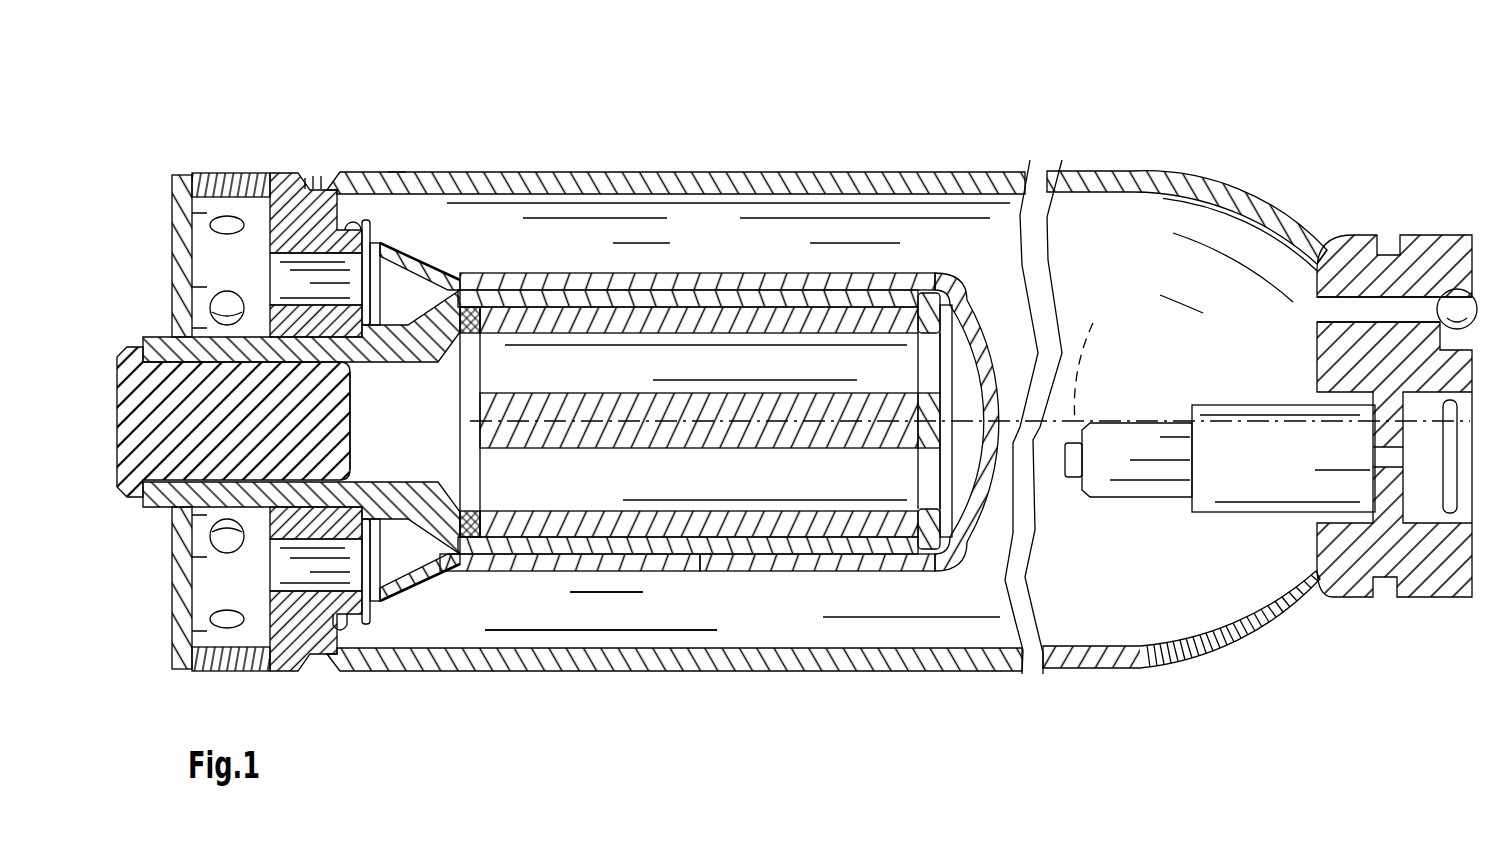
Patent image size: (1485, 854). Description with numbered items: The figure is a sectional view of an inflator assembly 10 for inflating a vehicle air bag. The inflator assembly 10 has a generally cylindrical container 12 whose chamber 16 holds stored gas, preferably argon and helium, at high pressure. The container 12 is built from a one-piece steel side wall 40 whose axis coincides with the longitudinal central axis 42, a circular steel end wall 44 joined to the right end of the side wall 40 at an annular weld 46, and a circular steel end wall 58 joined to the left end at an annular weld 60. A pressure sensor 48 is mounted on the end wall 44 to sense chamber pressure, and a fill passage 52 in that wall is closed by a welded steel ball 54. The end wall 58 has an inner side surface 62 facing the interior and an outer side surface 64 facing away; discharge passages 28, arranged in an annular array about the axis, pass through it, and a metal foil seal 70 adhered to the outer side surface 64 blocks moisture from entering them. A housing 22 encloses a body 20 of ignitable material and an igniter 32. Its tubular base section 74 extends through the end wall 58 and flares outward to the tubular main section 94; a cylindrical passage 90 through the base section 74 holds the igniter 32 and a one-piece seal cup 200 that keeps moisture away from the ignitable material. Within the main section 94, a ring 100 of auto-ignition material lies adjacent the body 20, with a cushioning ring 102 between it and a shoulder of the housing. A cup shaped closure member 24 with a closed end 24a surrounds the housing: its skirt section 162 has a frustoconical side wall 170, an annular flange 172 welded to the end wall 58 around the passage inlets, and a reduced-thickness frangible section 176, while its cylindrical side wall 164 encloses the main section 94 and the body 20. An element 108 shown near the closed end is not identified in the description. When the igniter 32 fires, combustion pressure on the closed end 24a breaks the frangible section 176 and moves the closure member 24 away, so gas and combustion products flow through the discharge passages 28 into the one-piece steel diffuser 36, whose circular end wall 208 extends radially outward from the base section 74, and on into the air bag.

The inflator assembly 10 is at (785, 738).
The container 12 is at (866, 677).
The chamber 16 is at (1082, 620).
The body of ignitable material 20 is at (840, 540).
The housing 22 is at (787, 557).
The cup shaped closure member 24 is at (655, 573).
The closed end 24a is at (990, 327).
The discharge passages 28 is at (290, 293).
The igniter 32 is at (167, 467).
The diffuser 36 is at (210, 678).
The side wall 40 is at (1060, 175).
The longitudinal central axis 42 is at (1097, 367).
The end wall 44 is at (1417, 233).
The annular weld 46 is at (1327, 248).
The pressure sensor 48 is at (1263, 417).
The fill passage 52 is at (1333, 310).
The steel ball 54 is at (1470, 292).
The end wall 58 is at (277, 172).
The annular weld 60 is at (323, 190).
The inner side surface 62 is at (397, 190).
The outer side surface 64 is at (233, 190).
The metal foil seal 70 is at (268, 262).
The tubular base section 74 is at (398, 322).
The cylindrical passage 90 is at (400, 397).
The tubular main section 94 is at (681, 297).
The ring of auto-ignition material 100 is at (485, 312).
The cushioning ring 102 is at (466, 305).
The end cap 108 is at (928, 300).
The skirt section 162 is at (430, 575).
The side wall 164 is at (695, 573).
The side wall 170 is at (428, 586).
The annular flange 172 is at (395, 630).
The frangible section 176 is at (380, 567).
The seal cup 200 is at (353, 460).
The end wall 208 is at (178, 298).